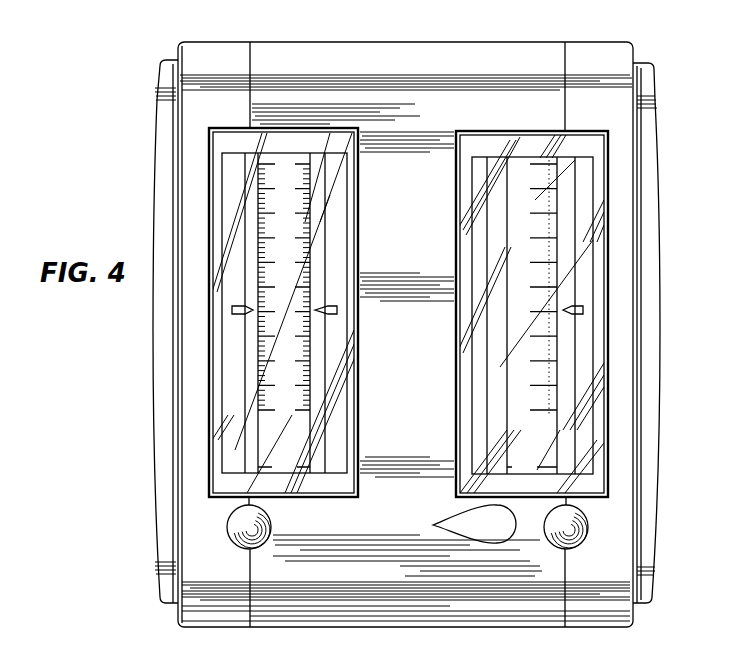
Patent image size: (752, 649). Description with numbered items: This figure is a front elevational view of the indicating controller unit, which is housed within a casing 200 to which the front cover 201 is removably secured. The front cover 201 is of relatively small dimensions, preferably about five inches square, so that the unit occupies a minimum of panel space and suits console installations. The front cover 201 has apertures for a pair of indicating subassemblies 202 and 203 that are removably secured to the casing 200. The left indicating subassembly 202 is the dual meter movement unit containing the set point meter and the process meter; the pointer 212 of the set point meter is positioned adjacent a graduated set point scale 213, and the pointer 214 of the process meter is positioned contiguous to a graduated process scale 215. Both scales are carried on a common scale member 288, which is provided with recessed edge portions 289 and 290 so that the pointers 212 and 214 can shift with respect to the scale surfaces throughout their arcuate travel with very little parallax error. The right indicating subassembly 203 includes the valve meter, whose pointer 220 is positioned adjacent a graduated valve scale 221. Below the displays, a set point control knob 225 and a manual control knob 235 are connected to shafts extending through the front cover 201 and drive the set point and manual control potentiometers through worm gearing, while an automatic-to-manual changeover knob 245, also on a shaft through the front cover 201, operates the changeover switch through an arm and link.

The casing 200 is at (322, 41).
The front cover 201 is at (530, 98).
The indicating subassembly 202 is at (208, 217).
The indicating subassembly 203 is at (608, 382).
The pointer 212 is at (232, 310).
The set point scale 213 is at (260, 202).
The pointer 214 is at (359, 317).
The process scale 215 is at (307, 205).
The pointer 220 is at (587, 310).
The valve scale 221 is at (550, 273).
The set point control knob 225 is at (240, 540).
The manual control knob 235 is at (578, 541).
The automatic-to-manual changeover knob 245 is at (453, 538).
The common scale member 288 is at (262, 215).
The recessed edge portion 289 is at (322, 182).
The recessed edge portion 290 is at (250, 182).